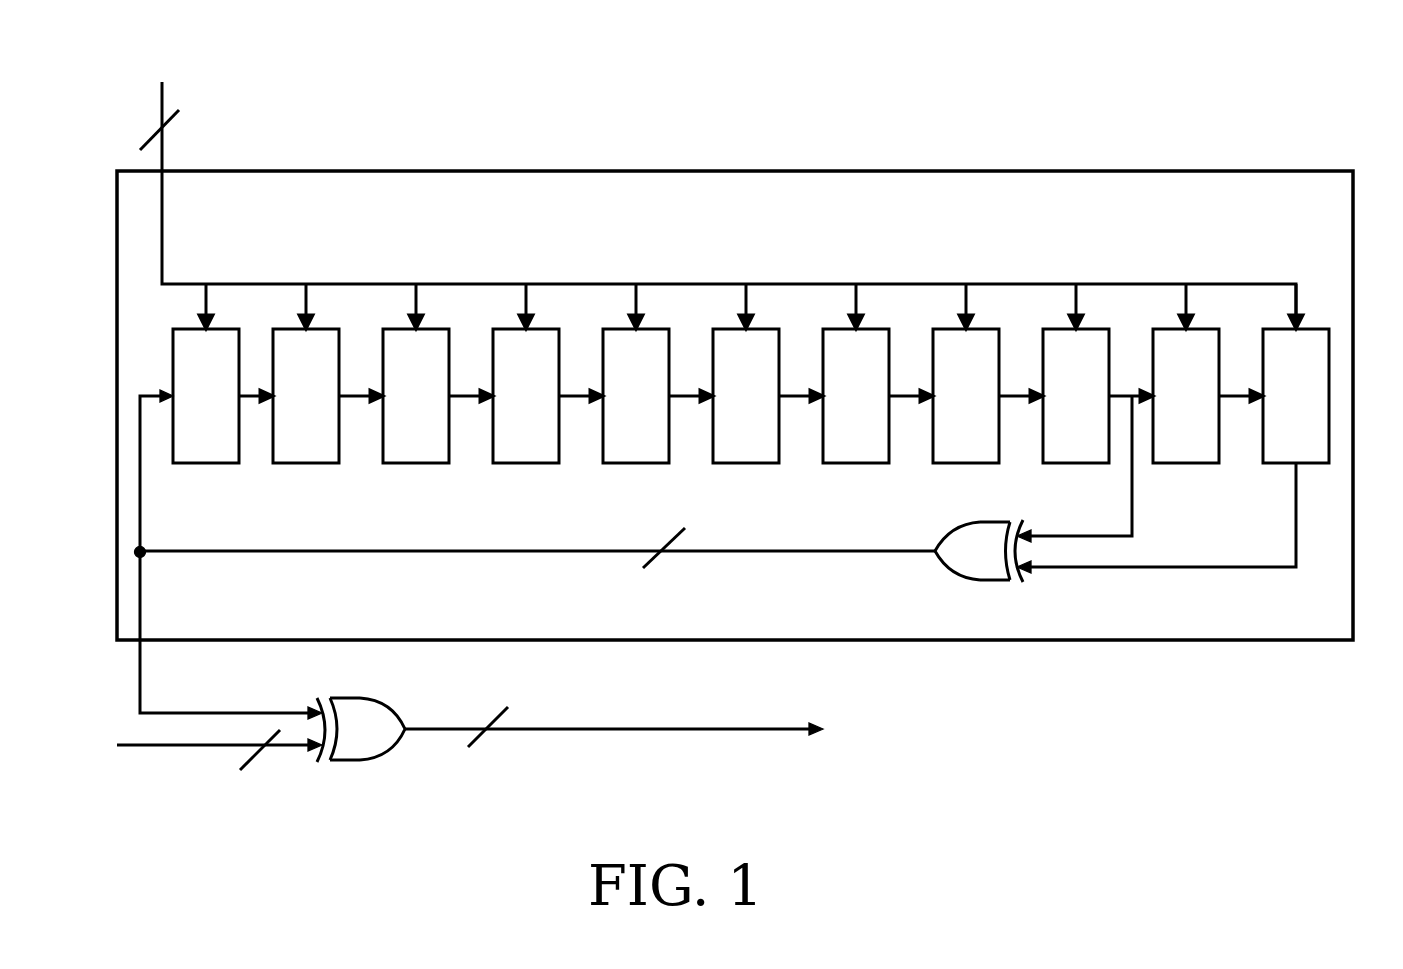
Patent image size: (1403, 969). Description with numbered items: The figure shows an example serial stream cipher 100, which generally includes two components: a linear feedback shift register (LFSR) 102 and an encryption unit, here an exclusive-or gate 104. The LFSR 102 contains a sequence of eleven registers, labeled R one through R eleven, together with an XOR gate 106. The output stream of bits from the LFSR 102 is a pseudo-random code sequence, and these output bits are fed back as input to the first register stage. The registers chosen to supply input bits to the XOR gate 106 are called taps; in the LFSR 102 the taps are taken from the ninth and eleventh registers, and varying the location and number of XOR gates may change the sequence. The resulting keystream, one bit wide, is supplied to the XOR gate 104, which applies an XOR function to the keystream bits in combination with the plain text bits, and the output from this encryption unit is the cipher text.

The serial stream cipher 100 is at (998, 75).
The linear feedback shift register (LFSR) 102 is at (778, 170).
The XOR gate 104 is at (363, 697).
The XOR gate 106 is at (980, 518).